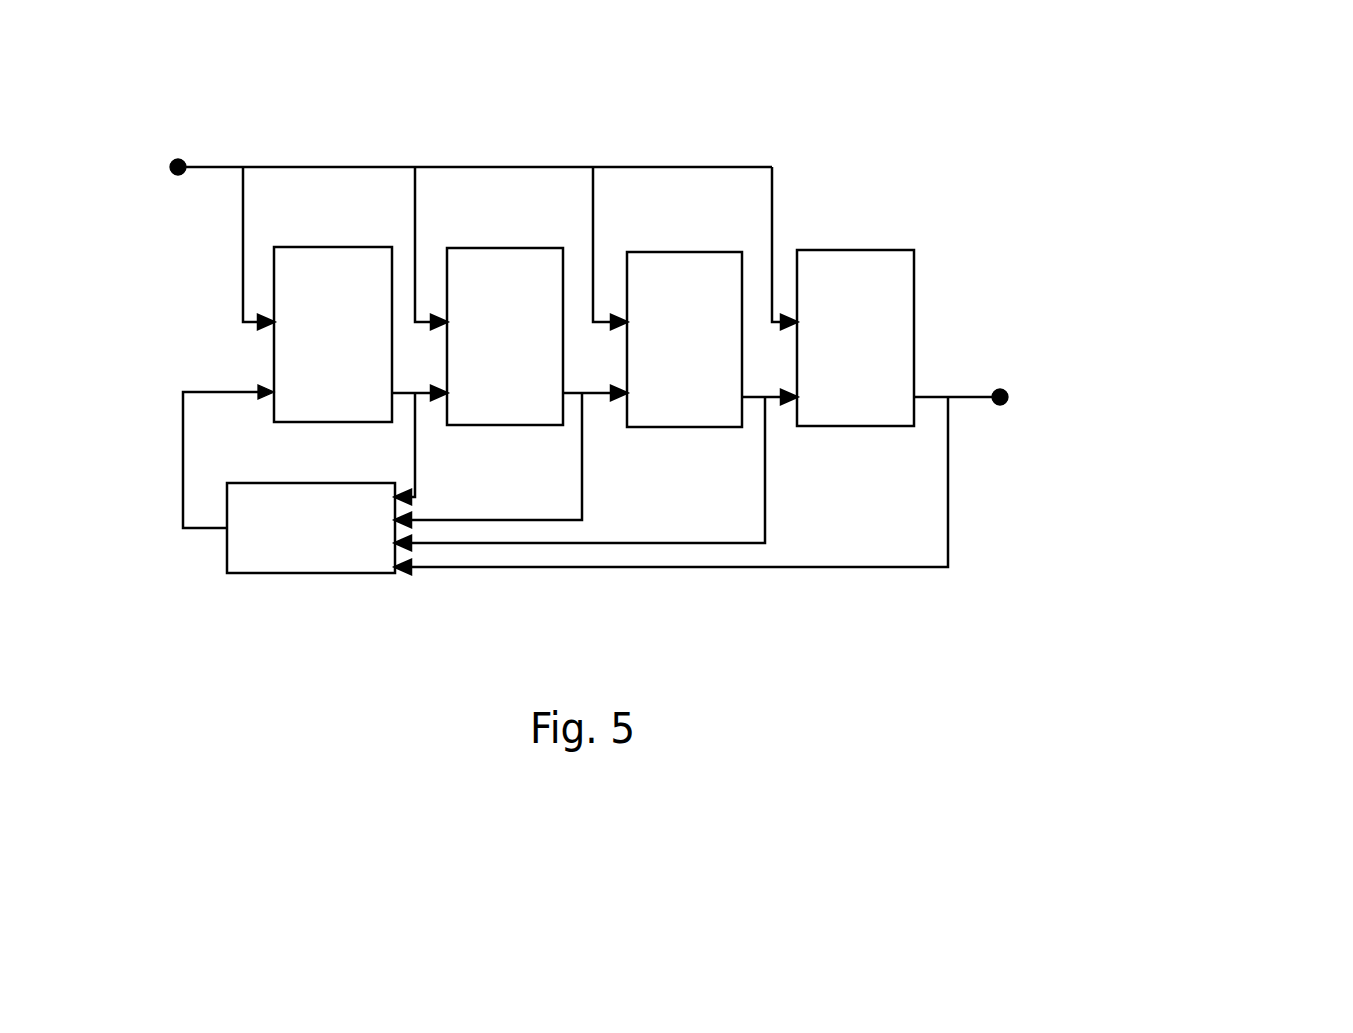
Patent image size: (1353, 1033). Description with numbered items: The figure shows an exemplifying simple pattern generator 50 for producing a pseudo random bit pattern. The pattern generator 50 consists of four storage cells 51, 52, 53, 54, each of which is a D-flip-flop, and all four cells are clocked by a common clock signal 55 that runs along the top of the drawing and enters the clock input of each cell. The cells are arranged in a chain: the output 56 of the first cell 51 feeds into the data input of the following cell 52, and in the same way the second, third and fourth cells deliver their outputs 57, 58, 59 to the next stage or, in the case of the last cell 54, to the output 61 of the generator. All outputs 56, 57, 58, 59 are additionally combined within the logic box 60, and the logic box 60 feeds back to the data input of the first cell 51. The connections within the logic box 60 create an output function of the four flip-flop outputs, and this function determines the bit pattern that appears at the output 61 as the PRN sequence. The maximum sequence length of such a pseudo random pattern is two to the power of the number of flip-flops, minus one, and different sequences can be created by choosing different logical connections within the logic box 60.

The pattern generator 50 is at (1078, 88).
The first storage cell 51 is at (287, 260).
The second storage cell 52 is at (470, 258).
The third storage cell 53 is at (665, 258).
The fourth storage cell 54 is at (837, 253).
The common clock signal 55 is at (315, 172).
The output of the first cell 56 is at (396, 387).
The output of the second cell 57 is at (567, 392).
The output of the third cell 58 is at (748, 394).
The output of the fourth cell 59 is at (932, 392).
The logic box 60 is at (303, 563).
The output 61 is at (1003, 388).